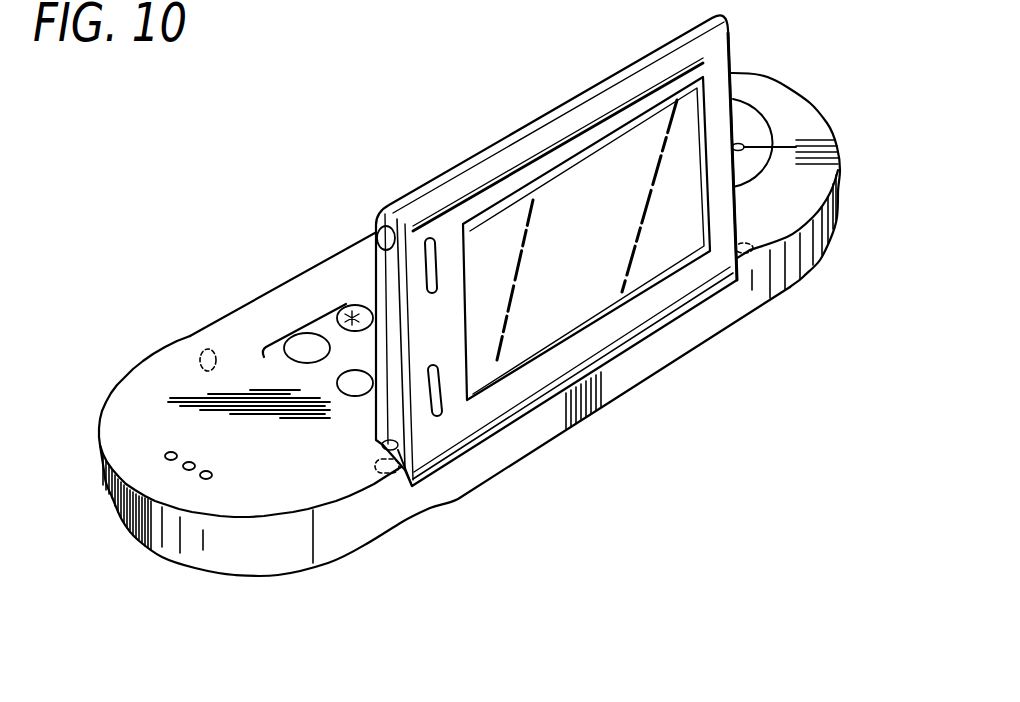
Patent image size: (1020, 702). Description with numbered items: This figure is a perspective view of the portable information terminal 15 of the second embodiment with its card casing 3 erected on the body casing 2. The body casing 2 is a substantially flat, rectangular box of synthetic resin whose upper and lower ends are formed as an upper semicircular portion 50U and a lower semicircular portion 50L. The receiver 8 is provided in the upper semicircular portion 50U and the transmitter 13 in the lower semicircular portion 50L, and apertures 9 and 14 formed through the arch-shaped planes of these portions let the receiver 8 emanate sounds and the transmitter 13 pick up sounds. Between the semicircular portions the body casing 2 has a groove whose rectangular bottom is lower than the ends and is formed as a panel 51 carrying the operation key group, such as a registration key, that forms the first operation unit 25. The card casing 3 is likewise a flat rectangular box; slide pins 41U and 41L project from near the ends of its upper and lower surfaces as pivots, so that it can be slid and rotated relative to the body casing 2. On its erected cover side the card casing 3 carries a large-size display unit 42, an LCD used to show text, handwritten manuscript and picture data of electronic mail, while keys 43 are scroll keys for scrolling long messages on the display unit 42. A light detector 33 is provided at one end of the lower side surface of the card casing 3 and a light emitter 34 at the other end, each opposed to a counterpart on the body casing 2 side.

The body casing 2 is at (780, 277).
The card casing 3 is at (560, 338).
The receiver 8 is at (750, 113).
The aperture 9 is at (792, 143).
The transmitter 13 is at (228, 492).
The aperture 14 is at (167, 451).
The portable information terminal 15 is at (266, 160).
The first operation unit 25 is at (345, 304).
The light detector 33 is at (406, 432).
The light emitter 34 is at (392, 224).
The slide pin 41L is at (394, 475).
The slide pin 41U is at (755, 249).
The display unit 42 is at (587, 173).
The keys 43 is at (440, 368).
The lower semicircular portion 50L is at (140, 532).
The upper semicircular portion 50U is at (807, 113).
The panel 51 is at (247, 341).